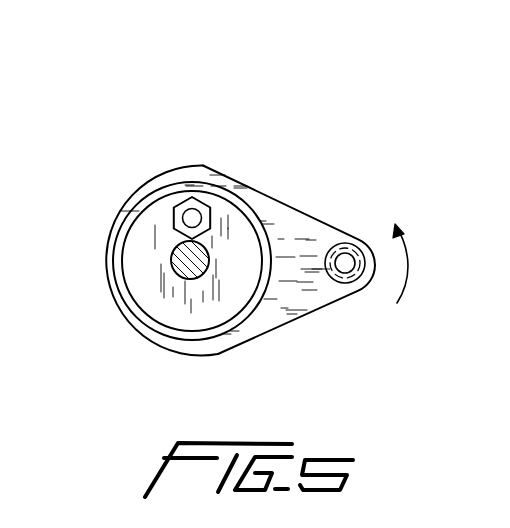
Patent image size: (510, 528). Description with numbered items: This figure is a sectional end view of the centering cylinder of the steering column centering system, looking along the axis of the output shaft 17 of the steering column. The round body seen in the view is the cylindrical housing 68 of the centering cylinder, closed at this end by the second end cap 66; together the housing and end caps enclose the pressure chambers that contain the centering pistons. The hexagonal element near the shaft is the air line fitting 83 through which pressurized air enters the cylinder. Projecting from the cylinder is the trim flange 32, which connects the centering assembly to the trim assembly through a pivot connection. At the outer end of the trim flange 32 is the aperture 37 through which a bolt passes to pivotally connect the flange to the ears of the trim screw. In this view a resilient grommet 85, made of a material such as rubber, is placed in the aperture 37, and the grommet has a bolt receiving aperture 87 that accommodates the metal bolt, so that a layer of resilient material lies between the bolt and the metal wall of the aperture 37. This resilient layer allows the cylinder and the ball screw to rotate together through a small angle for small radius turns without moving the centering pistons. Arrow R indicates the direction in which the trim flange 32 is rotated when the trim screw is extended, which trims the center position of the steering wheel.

The output shaft 17 is at (177, 246).
The trim flange 32 is at (273, 333).
The aperture 37 is at (363, 284).
The second end cap 66 is at (130, 283).
The cylindrical housing 68 is at (134, 320).
The air line fitting 83 is at (207, 200).
The resilient grommet 85 is at (340, 270).
The bolt receiving aperture 87 is at (338, 282).
The arrow R is at (412, 257).